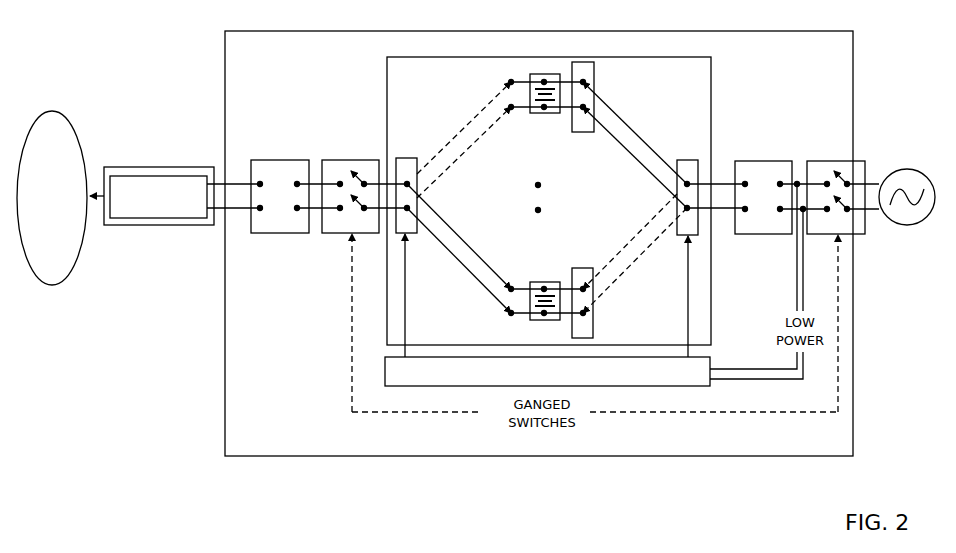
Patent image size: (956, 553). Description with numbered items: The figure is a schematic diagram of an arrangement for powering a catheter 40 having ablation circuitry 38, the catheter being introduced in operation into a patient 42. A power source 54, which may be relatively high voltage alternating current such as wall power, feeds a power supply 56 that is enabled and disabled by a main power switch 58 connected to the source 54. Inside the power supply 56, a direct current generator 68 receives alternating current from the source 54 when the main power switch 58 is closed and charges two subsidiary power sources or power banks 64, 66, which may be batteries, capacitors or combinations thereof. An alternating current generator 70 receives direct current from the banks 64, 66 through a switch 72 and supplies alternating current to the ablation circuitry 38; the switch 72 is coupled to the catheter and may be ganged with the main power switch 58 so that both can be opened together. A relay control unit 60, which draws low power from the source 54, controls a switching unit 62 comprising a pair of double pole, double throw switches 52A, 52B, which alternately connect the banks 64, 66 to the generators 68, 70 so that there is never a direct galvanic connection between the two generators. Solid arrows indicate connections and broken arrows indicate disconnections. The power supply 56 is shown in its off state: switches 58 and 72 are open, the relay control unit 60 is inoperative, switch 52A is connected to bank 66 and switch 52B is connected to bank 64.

The patient 42 is at (60, 111).
The catheter 40 is at (144, 167).
The ablation circuitry 38 is at (178, 218).
The alternating current generator 70 is at (287, 160).
The switch 72 is at (340, 160).
The switch 52A is at (405, 158).
The switch 52B is at (688, 160).
The switching unit 62 is at (711, 107).
The power bank 64 is at (548, 113).
The power bank 66 is at (548, 282).
The direct current generator 68 is at (770, 234).
The main power switch 58 is at (857, 161).
The power source 54 is at (905, 170).
The relay control unit 60 is at (698, 386).
The power supply 56 is at (760, 456).